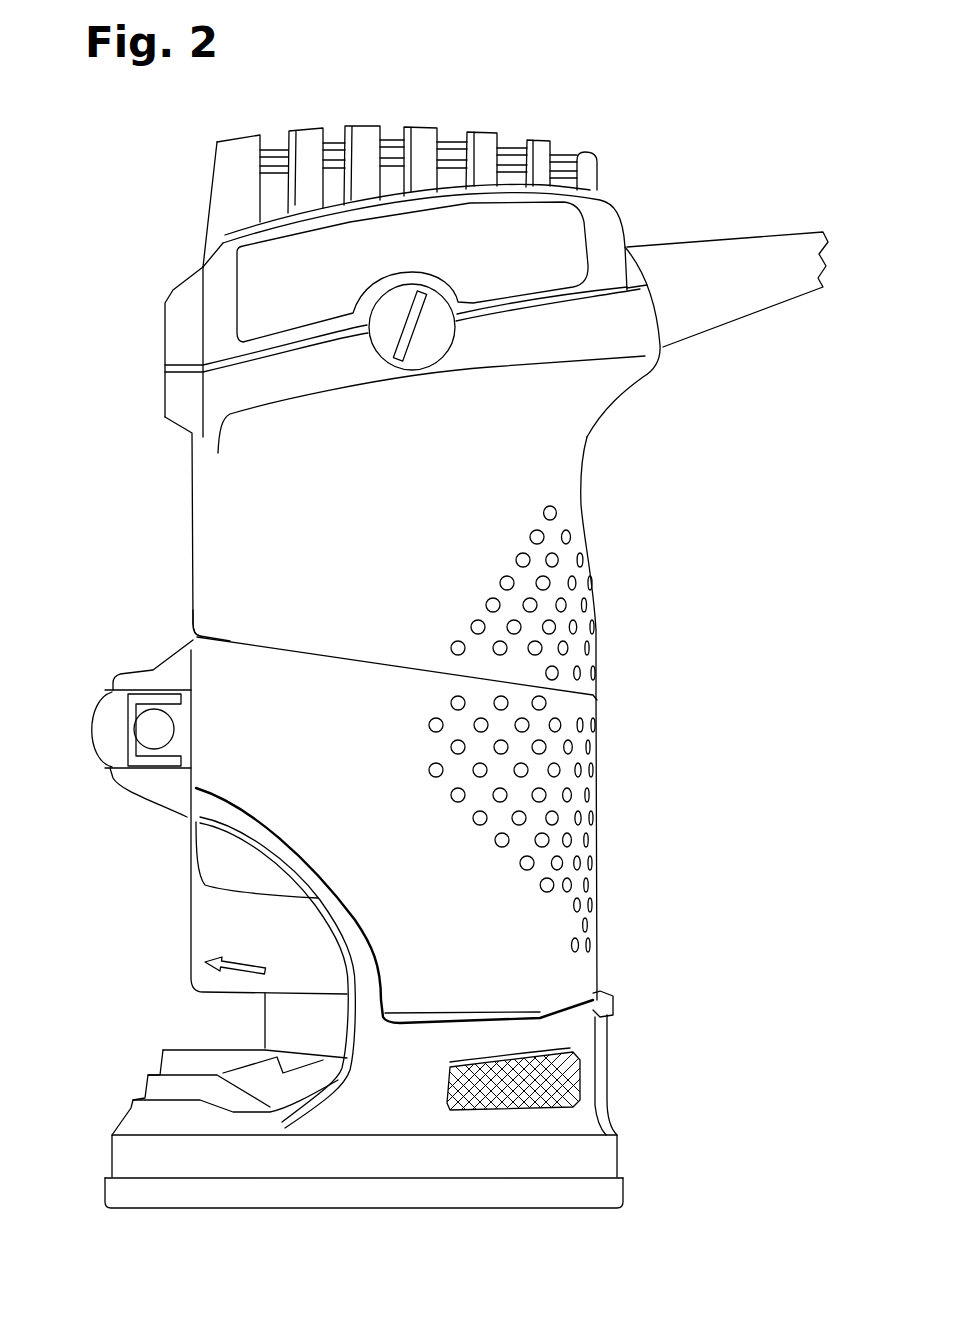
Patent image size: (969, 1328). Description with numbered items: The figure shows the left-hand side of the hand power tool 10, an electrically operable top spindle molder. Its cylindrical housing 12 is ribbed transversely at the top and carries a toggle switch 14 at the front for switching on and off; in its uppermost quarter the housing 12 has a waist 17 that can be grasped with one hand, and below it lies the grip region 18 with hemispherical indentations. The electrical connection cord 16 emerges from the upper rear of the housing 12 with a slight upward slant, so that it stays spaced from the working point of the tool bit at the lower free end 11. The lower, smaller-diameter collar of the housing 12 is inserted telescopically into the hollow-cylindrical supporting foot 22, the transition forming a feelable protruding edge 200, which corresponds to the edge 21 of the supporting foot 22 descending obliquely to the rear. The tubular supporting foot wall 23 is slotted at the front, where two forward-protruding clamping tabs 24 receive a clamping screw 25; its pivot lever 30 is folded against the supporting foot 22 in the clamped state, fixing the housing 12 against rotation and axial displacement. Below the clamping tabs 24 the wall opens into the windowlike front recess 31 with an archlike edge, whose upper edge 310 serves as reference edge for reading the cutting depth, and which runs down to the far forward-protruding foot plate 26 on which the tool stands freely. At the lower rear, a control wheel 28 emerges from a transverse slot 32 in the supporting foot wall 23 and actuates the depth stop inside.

The hand power tool 10 is at (638, 95).
The lower free end 11 is at (282, 1020).
The housing 12 is at (450, 122).
The toggle switch 14 is at (150, 326).
The electrical connection cord 16 is at (760, 243).
The waist 17 is at (605, 428).
The grip region 18 is at (600, 648).
The edge 21 is at (268, 632).
The protrusion or feelable edge 200 is at (272, 658).
The supporting foot 22 is at (277, 760).
The supporting foot wall 23 is at (362, 1097).
The clamping tabs 24 is at (147, 667).
The clamping screw 25 is at (143, 727).
The foot plate 26 is at (238, 1167).
The control wheel 28 is at (527, 1100).
The pivot lever 30 is at (103, 723).
The windowlike front recess 31 is at (178, 1035).
The transverse slot 32 is at (460, 1110).
The upper edge 310 is at (343, 937).